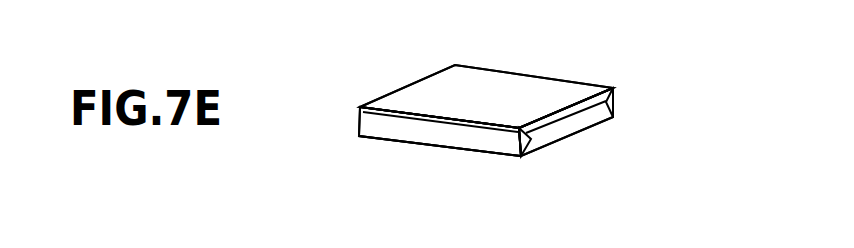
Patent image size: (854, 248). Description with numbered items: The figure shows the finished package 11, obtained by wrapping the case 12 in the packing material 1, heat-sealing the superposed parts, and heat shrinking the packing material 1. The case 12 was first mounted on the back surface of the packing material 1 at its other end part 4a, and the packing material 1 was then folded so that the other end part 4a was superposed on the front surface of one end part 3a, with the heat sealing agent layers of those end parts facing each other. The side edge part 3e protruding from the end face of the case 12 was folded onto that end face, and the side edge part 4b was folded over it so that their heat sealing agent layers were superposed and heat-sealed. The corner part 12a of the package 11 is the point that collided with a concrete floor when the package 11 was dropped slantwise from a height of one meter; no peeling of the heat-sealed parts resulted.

The packing material 1 is at (532, 88).
The case 12 is at (445, 82).
The corner part 12a is at (520, 160).
The package 11 is at (544, 178).
The one end part 3a is at (475, 140).
The side edge part 3e is at (613, 88).
The other end part 4a is at (385, 109).
The side edge part 4b is at (582, 122).